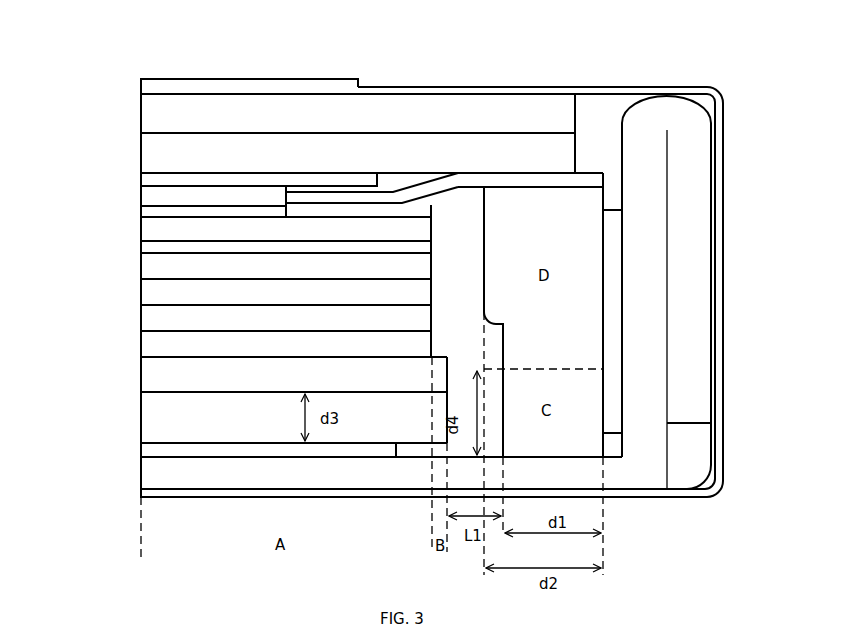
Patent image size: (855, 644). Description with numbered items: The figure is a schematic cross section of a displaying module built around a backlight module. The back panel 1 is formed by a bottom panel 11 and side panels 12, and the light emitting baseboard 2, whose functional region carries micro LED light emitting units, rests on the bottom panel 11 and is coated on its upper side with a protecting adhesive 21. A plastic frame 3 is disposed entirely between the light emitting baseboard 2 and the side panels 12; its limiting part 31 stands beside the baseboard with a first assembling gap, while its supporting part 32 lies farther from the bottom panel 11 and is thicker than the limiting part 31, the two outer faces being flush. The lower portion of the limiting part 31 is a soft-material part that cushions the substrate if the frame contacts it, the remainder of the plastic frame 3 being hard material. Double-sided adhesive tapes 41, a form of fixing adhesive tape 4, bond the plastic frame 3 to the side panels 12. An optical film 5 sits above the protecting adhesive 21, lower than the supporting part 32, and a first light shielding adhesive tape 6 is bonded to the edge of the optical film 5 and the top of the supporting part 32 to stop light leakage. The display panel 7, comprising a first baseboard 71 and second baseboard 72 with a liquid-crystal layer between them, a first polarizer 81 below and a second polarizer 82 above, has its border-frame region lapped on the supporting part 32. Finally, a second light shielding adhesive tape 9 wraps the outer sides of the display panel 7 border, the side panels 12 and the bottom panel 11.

The back panel 1 is at (693, 197).
The bottom panel 11 is at (193, 478).
The side panels 12 is at (655, 275).
The light emitting baseboard 2 is at (162, 418).
The protecting adhesive 21 is at (160, 380).
The plastic frame 3 is at (604, 398).
The limiting part 31 is at (565, 414).
The supporting part 32 is at (548, 220).
The fixing adhesive tape 4 is at (173, 452).
The double-sided adhesive tapes 41 is at (608, 350).
The optical film 5 is at (127, 222).
The first light shielding adhesive tape 6 is at (437, 187).
The display panel 7 is at (63, 108).
The first baseboard 71 is at (177, 158).
The second baseboard 72 is at (177, 112).
The first polarizer 81 is at (142, 185).
The second polarizer 82 is at (193, 88).
The second light shielding adhesive tape 9 is at (633, 88).